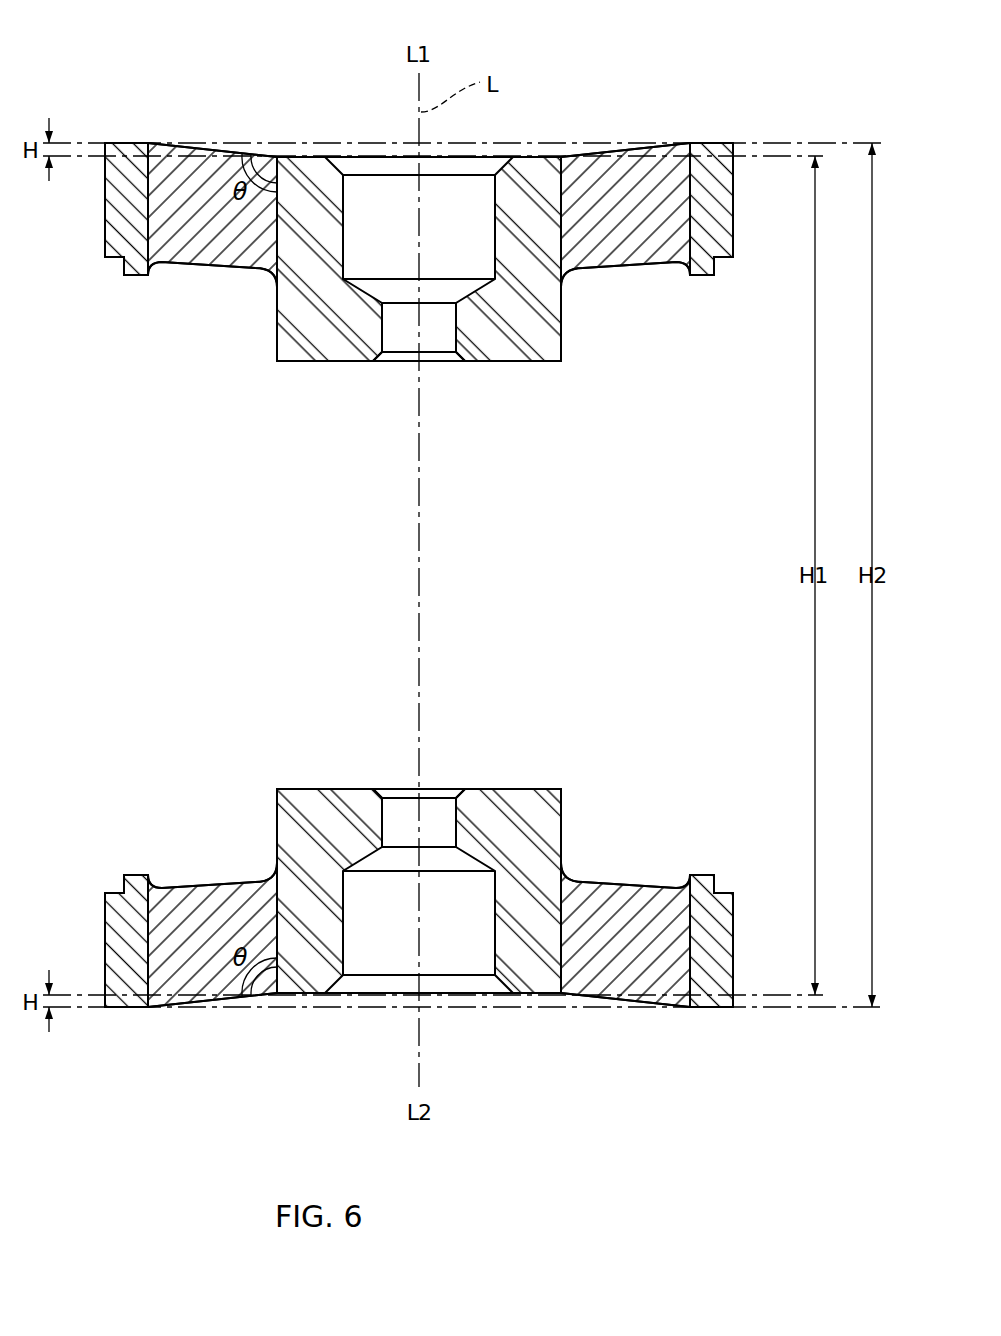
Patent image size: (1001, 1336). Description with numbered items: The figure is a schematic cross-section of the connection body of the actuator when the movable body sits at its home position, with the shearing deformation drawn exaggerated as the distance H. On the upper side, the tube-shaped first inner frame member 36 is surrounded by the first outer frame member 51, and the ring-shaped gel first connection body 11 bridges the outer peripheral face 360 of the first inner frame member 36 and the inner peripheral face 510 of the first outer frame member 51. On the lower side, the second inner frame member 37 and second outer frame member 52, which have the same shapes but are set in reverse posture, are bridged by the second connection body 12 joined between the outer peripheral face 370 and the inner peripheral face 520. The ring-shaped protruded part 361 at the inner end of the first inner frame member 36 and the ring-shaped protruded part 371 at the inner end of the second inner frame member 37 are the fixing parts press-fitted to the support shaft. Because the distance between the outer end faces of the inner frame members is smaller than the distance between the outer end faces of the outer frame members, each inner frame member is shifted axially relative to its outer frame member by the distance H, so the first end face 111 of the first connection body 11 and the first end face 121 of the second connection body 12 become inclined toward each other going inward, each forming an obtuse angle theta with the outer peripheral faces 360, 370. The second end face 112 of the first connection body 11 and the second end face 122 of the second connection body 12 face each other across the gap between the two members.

The first connection body 11 is at (600, 262).
The second connection body 12 is at (600, 888).
The first inner frame member 36 is at (305, 155).
The second inner frame member 37 is at (305, 996).
The first outer frame member 51 is at (120, 143).
The second outer frame member 52 is at (125, 1008).
The first end face of the first connection body 111 is at (213, 145).
The second end face of the first connection body 112 is at (203, 268).
The first end face of the second connection body 121 is at (213, 1003).
The second end face of the second connection body 122 is at (203, 882).
The outer peripheral face of the first inner frame member 360 is at (571, 175).
The ring-shaped protruded part 361 is at (357, 362).
The outer peripheral face of the second inner frame member 370 is at (573, 983).
The ring-shaped protruded part 371 is at (357, 790).
The inner peripheral face of the first outer frame member 510 is at (733, 178).
The inner peripheral face of the second outer frame member 520 is at (733, 930).